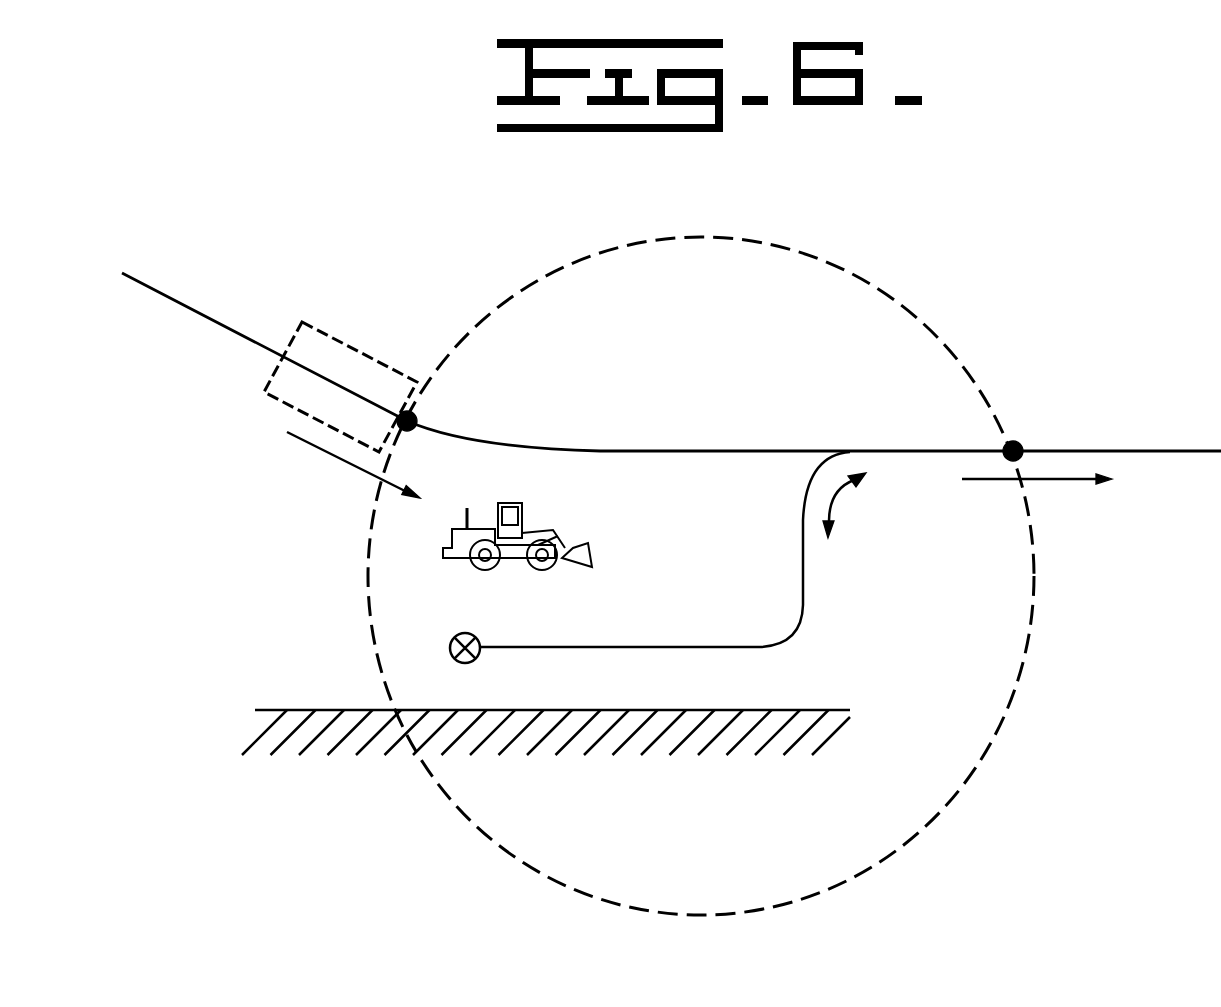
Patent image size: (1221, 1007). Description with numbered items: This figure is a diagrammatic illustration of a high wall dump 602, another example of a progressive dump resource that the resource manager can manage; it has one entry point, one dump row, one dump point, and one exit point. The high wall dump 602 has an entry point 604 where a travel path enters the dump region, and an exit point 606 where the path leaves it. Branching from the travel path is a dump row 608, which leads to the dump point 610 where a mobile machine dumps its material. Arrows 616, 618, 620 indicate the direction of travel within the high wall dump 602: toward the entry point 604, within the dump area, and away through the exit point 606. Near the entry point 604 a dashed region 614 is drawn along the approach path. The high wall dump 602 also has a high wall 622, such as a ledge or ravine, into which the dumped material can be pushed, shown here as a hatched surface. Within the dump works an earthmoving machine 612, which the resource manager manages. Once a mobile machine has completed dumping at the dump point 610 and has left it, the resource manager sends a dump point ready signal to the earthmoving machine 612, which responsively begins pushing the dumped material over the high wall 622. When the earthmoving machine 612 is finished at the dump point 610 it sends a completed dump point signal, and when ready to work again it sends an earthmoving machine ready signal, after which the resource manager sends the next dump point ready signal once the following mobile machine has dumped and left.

The high wall dump 602 is at (873, 280).
The entry point 604 is at (416, 417).
The exit point 606 is at (1015, 441).
The dump row 608 is at (804, 612).
The dump point 610 is at (463, 633).
The earthmoving machine 612 is at (590, 548).
The entry zone 614 is at (337, 342).
The arrow 616 is at (328, 455).
The arrow 618 is at (838, 493).
The arrow 620 is at (1067, 483).
The high wall 622 is at (297, 710).